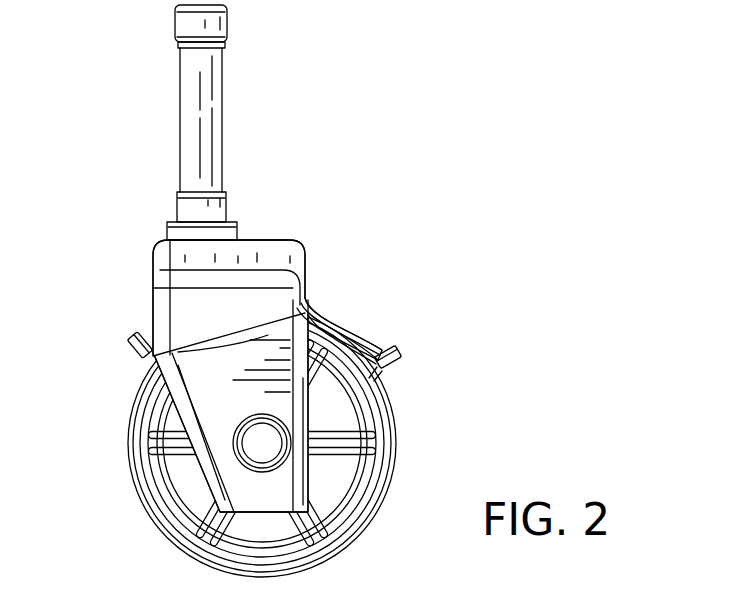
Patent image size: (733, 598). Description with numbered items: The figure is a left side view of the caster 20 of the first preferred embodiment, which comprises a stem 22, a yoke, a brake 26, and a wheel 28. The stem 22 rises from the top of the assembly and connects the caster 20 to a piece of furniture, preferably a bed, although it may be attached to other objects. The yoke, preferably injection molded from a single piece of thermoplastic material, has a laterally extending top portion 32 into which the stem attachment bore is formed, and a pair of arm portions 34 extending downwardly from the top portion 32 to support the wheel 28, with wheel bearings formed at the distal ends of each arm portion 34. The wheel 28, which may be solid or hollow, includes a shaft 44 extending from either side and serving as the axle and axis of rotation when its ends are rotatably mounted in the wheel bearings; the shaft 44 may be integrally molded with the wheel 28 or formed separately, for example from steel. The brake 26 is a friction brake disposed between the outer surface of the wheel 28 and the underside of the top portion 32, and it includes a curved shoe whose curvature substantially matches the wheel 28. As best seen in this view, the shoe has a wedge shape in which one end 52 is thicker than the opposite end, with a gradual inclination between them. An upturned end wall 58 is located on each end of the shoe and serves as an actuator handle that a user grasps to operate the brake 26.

The caster 20 is at (433, 247).
The stem 22 is at (202, 107).
The brake 26 is at (333, 308).
The wheel 28 is at (393, 458).
The top portion 32 is at (262, 247).
The arm portion 34 is at (192, 313).
The shaft 44 is at (270, 452).
The thicker end of brake shoe 52 is at (375, 330).
The upturned end wall 58 is at (140, 348).